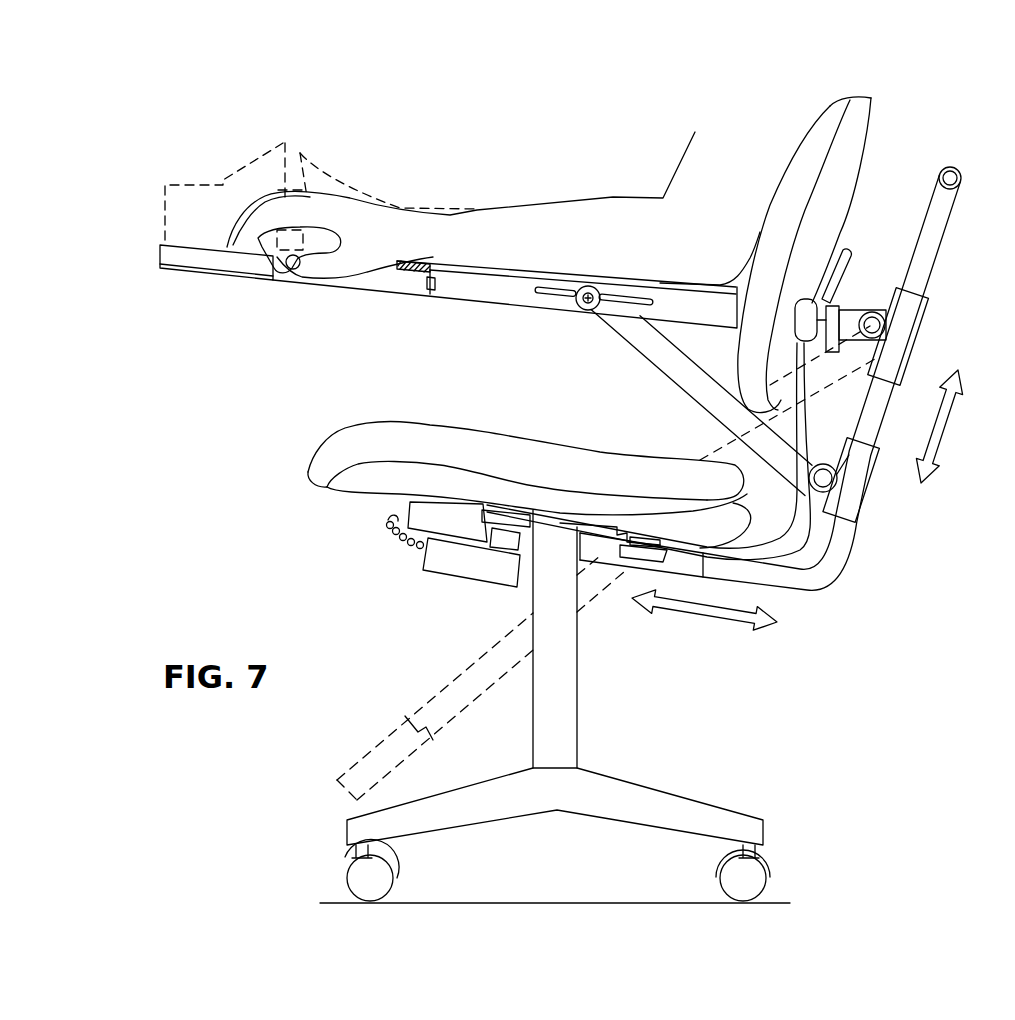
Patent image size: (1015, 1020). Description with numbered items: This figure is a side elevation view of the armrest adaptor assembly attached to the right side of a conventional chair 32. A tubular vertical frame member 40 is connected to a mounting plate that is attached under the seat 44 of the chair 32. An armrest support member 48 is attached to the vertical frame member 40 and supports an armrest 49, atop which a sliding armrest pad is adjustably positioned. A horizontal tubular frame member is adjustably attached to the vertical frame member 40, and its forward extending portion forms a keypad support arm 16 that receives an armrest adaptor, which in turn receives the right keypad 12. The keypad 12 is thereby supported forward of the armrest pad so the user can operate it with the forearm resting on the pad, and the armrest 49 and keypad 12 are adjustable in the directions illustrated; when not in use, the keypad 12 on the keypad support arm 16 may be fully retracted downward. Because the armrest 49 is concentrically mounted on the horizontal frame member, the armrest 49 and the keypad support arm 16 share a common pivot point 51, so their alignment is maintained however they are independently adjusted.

The right keypad 12 is at (152, 207).
The keypad support arm 16 is at (373, 283).
The chair 32 is at (597, 687).
The tubular vertical frame member 40 is at (795, 584).
The seat 44 is at (363, 495).
The armrest support member 48 is at (670, 363).
The armrest 49 is at (513, 295).
The common pivot point 51 is at (880, 300).